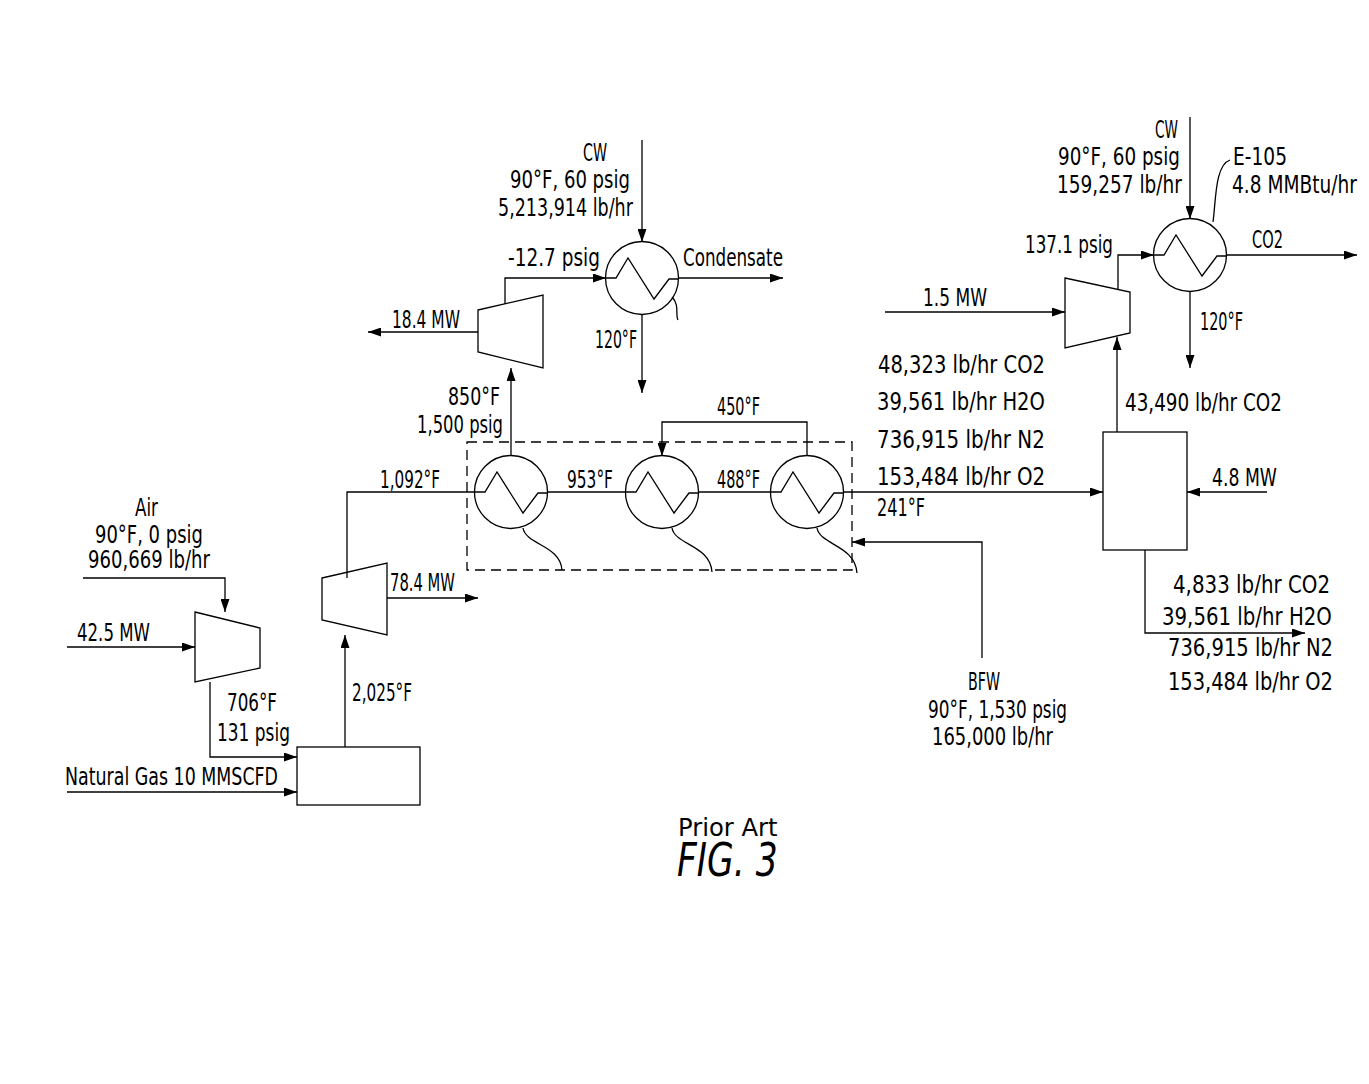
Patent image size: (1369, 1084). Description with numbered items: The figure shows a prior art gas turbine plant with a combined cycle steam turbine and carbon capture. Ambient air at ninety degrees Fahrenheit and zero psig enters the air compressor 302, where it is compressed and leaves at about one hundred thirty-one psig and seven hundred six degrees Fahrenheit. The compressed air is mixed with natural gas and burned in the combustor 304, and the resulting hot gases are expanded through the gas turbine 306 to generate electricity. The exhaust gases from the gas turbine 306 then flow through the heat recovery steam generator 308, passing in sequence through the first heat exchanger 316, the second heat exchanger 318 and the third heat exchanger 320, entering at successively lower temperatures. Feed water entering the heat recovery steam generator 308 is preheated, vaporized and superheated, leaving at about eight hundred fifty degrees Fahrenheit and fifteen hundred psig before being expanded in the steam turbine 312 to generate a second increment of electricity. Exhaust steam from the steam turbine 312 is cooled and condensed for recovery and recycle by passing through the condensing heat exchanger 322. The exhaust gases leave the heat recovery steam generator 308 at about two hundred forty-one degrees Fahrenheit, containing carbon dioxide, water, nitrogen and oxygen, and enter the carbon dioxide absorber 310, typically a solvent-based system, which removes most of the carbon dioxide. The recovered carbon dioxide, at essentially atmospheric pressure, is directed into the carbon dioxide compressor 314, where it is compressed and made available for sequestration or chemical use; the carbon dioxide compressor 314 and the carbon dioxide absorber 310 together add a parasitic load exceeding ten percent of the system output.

The compressor C-1 302 is at (240, 647).
The combustor 304 is at (417, 772).
The turbine T-1 306 is at (383, 597).
The heat recovery steam generator (HRSG) 308 is at (728, 570).
The carbon dioxide absorber 310 is at (1183, 457).
The turbine T-2 312 is at (542, 327).
The compressor C-2 314 is at (1063, 287).
The first heat exchanger 316 is at (550, 489).
The heat exchanger 318 is at (700, 489).
The heat exchanger 320 is at (840, 489).
The heat exchanger 322 is at (677, 270).